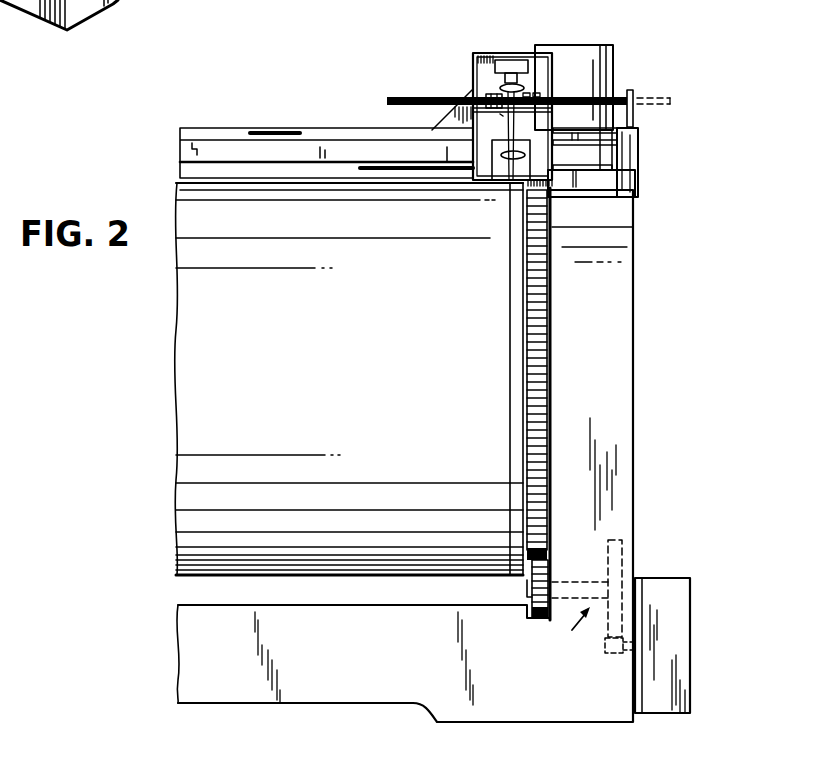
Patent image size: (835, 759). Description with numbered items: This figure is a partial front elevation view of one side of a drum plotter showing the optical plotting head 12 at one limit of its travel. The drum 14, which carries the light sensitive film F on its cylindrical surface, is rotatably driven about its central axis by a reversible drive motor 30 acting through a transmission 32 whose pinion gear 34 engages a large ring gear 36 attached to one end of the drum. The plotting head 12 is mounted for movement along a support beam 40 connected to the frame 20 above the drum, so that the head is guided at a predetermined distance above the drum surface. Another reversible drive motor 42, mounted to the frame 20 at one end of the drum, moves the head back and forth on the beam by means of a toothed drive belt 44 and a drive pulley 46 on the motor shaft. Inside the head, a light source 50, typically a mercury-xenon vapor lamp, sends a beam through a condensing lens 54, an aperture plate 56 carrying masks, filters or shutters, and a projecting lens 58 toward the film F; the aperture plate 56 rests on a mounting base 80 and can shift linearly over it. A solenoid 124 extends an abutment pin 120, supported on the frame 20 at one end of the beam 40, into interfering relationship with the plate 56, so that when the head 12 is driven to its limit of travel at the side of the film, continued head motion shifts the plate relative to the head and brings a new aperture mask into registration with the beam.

The plotting head 12 is at (505, 52).
The drum 14 is at (520, 440).
The frame 20 is at (192, 660).
The reversible drive motor 30 is at (672, 577).
The transmission 32 is at (592, 600).
The pinion gear 34 is at (530, 618).
The ring gear 36 is at (548, 303).
The support beam 40 is at (320, 145).
The reversible drive motor 42 is at (585, 48).
The toothed drive belt 44 is at (313, 155).
The drive pulley 46 is at (578, 171).
The light source 50 is at (495, 68).
The condensing lens 54 is at (522, 86).
The aperture plate 56 is at (428, 97).
The projecting lens 58 is at (500, 160).
The mounting base 80 is at (492, 123).
The abutment pin 120 is at (633, 95).
The solenoid 124 is at (638, 180).
The film F is at (178, 328).